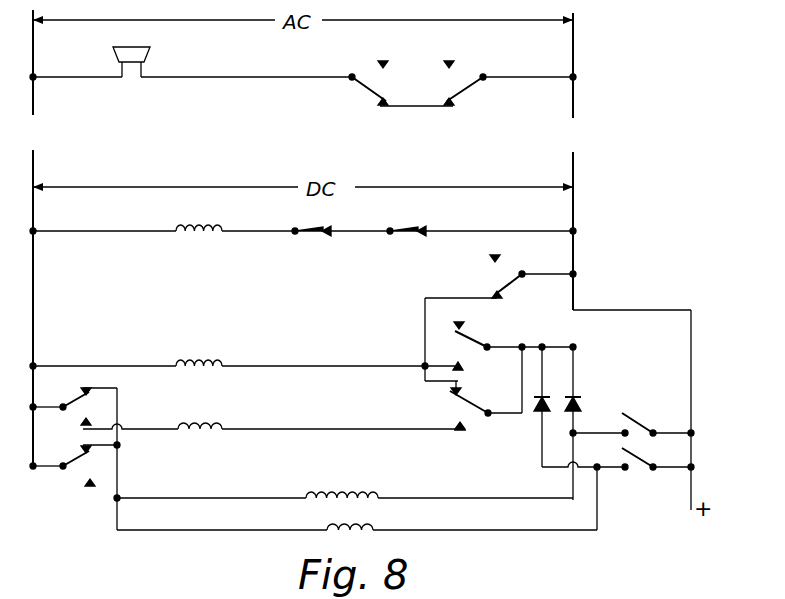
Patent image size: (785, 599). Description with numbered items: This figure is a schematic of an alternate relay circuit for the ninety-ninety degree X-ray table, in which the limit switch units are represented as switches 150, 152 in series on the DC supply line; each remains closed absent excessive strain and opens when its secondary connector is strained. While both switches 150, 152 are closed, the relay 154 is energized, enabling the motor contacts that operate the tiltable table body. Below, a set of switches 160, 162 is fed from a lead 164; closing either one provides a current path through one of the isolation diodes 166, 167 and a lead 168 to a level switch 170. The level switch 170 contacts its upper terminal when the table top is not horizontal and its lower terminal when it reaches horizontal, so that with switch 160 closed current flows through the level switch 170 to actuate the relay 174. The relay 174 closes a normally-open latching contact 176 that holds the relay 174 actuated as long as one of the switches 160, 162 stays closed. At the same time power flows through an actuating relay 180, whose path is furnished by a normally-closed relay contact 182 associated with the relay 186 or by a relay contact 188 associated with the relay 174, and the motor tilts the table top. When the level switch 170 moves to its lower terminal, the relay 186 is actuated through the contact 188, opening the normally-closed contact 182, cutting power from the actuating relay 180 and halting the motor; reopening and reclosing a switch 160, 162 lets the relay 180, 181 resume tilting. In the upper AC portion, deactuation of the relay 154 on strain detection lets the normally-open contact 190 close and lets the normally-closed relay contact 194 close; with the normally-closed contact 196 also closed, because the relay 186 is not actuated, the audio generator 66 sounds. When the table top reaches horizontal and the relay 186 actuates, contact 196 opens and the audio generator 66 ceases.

The audio generator 66 is at (150, 49).
The relay contact 194 is at (366, 91).
The relay contact 196 is at (463, 91).
The relay 154 is at (212, 236).
The switch 150 is at (300, 236).
The switch 152 is at (394, 236).
The relay contact 190 is at (511, 272).
The latching contact 176 is at (470, 334).
The relay 174 is at (193, 360).
The relay contact 188 is at (72, 398).
The level switch 170 is at (474, 402).
The lead 168 is at (519, 418).
The isolation diode 167 is at (549, 400).
The isolation diode 166 is at (580, 400).
The switch 160 is at (636, 420).
The switch 162 is at (640, 471).
The lead 164 is at (693, 410).
The relay 186 is at (200, 423).
The relay contact 182 is at (72, 473).
The actuating relay 180 is at (347, 488).
The relay 181 is at (374, 524).